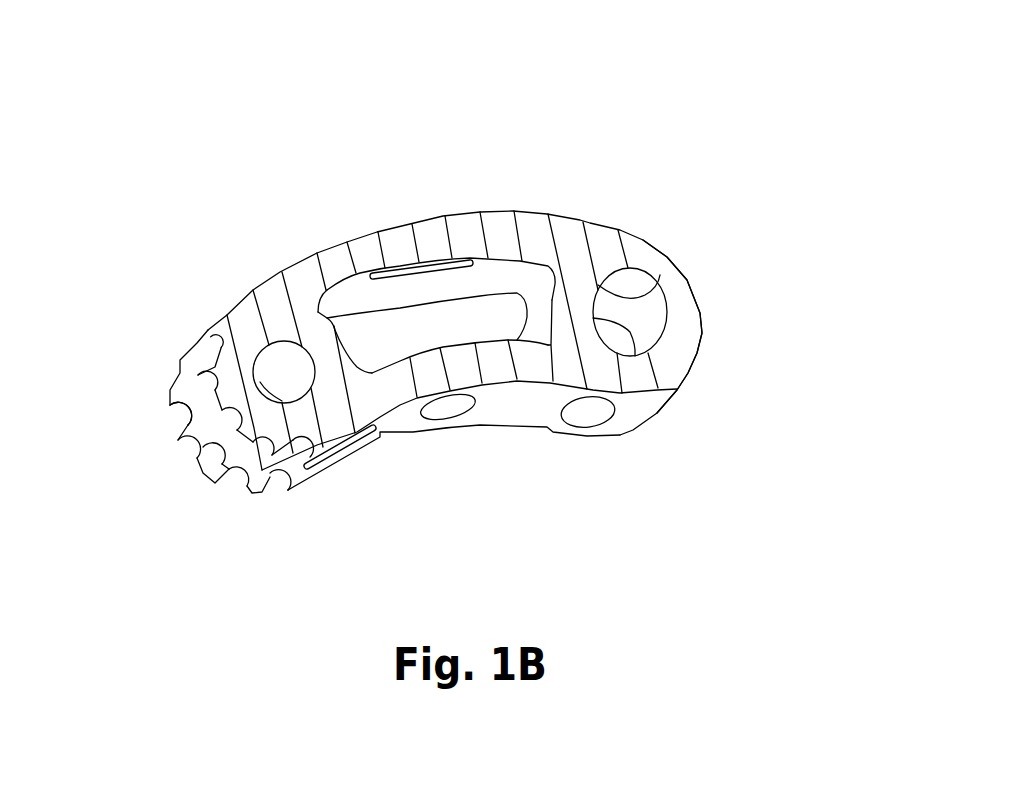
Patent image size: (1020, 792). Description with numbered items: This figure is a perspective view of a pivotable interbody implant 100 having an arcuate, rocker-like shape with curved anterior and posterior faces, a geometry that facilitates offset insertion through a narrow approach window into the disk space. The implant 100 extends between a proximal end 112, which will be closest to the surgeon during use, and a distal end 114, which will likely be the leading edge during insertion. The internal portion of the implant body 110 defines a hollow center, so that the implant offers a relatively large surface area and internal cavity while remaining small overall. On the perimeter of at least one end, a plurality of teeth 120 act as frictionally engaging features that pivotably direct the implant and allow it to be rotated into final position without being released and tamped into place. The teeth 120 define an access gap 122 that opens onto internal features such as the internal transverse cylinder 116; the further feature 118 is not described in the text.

The interbody implant 100 is at (671, 78).
The implant body 110 is at (594, 214).
The proximal end 112 is at (121, 417).
The distal end 114 is at (745, 328).
The internal transverse cylinder 116 is at (283, 341).
The recessed pad 118 is at (480, 285).
The teeth 120 is at (186, 501).
The access gap 122 is at (176, 383).